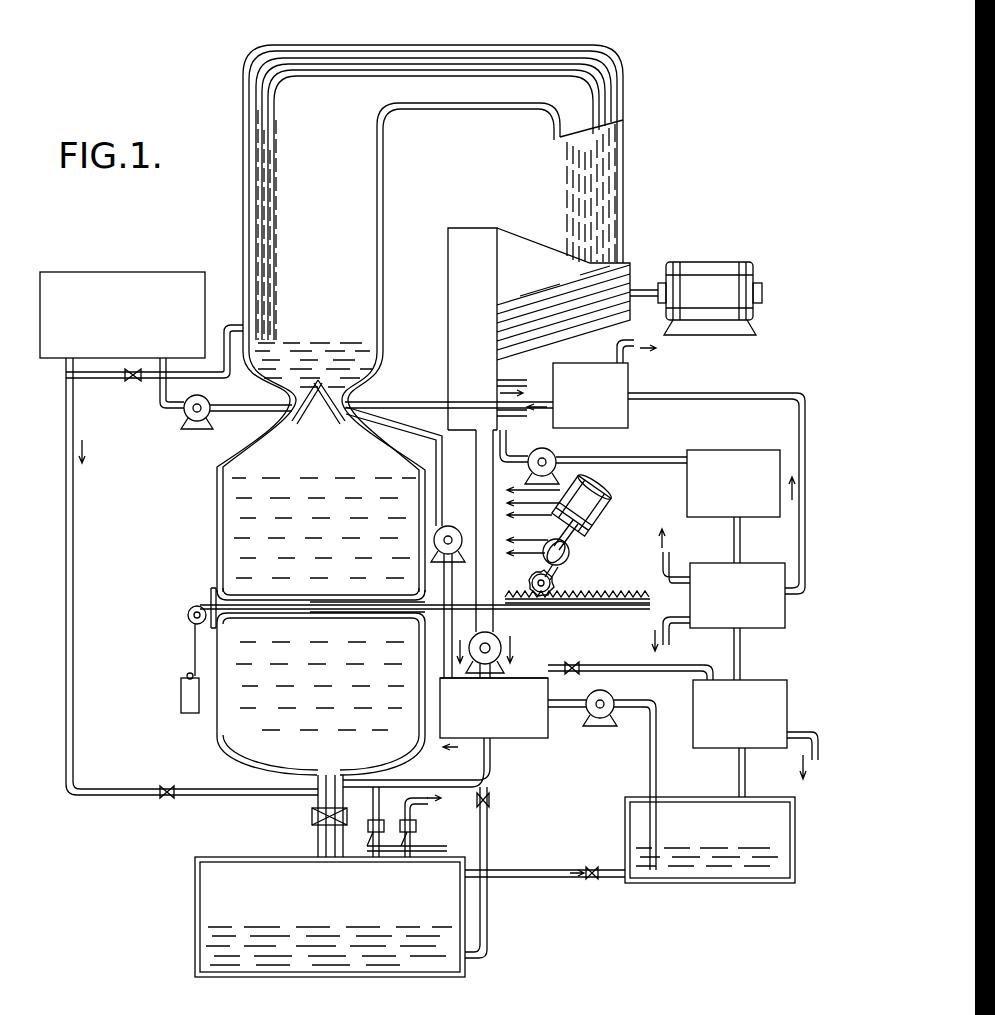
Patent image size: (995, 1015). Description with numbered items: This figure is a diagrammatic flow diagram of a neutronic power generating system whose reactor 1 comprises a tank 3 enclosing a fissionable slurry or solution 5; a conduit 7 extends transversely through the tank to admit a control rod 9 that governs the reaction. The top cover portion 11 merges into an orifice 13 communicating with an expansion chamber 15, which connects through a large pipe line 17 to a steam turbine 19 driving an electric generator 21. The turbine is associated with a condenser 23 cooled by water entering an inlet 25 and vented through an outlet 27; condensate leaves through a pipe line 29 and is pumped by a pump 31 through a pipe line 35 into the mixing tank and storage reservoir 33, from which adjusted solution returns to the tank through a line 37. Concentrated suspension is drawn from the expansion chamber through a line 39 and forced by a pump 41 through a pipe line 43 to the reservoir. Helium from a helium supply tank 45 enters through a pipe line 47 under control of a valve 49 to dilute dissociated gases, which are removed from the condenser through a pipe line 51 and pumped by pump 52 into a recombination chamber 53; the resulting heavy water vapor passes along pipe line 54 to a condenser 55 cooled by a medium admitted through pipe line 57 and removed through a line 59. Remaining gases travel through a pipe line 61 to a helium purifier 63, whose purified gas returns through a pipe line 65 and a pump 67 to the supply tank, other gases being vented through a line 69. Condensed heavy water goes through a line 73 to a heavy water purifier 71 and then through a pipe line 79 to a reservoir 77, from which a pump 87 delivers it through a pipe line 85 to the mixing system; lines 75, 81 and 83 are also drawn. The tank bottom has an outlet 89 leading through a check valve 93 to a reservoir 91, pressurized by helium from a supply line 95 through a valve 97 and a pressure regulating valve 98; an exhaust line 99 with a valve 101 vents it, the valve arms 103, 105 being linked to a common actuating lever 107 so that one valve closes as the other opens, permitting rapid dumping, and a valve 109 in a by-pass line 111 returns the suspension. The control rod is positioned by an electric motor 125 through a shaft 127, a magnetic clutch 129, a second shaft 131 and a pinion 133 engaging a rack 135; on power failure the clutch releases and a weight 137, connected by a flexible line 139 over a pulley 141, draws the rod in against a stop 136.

The reactor 1 is at (203, 502).
The tank 3 is at (218, 525).
The slurry or solution 5 is at (240, 546).
The conduit 7 is at (278, 618).
The control rod 9 is at (412, 611).
The top cover portion 11 is at (232, 452).
The orifice 13 is at (319, 379).
The expansion chamber 15 is at (378, 215).
The pipe line 17 is at (500, 65).
The steam turbine 19 is at (507, 240).
The electric generator 21 is at (710, 266).
The condenser 23 is at (448, 268).
The inlet 25 is at (510, 418).
The outlet 27 is at (528, 380).
The pipe line 29 is at (476, 490).
The pump 31 is at (498, 648).
The mixing tank and storage reservoir 33 is at (548, 734).
The pipe line 35 is at (480, 672).
The line 37 is at (488, 762).
The line 39 is at (404, 430).
The pump 41 is at (456, 531).
The pipe line 43 is at (460, 616).
The helium supply tank 45 is at (172, 275).
The pipe line 47 is at (110, 378).
The valve 49 is at (133, 382).
The pipe line 51 is at (505, 446).
The pump 52 is at (553, 455).
The recombination chamber 53 is at (730, 450).
The pipe line 54 is at (741, 535).
The condenser 55 is at (770, 625).
The pipe line 57 is at (668, 617).
The line 59 is at (676, 562).
The pipe line 61 is at (762, 386).
The helium purifier 63 is at (628, 380).
The pipe line 65 is at (392, 401).
The pump 67 is at (207, 404).
The line 69 is at (616, 350).
The heavy water purifier 71 is at (787, 695).
The line 73 is at (742, 659).
The outlet 75 is at (802, 732).
The reservoir 77 is at (782, 811).
The pipe line 79 is at (746, 770).
The valve 81 is at (565, 666).
The conduit 83 is at (580, 666).
The pipe line 85 is at (652, 765).
The pump 87 is at (603, 720).
The outlet 89 is at (316, 780).
The reservoir 91 is at (210, 905).
The check valve 93 is at (311, 816).
The supply line 95 is at (74, 580).
The valve 97 is at (383, 820).
The pressure regulating valve 98 is at (166, 800).
The exhaust line 99 is at (420, 814).
The valve 101 is at (416, 828).
The valve arm 103 is at (370, 836).
The valve arm 105 is at (418, 848).
The actuating lever 107 is at (418, 862).
The valve 109 is at (495, 800).
The by-pass line 111 is at (489, 912).
The electric motor 125 is at (602, 506).
The shaft 127 is at (576, 530).
The magnetic clutch 129 is at (570, 551).
The second shaft 131 is at (560, 567).
The pinion 133 is at (530, 584).
The rack 135 is at (600, 592).
The stop 136 is at (210, 590).
The weight 137 is at (181, 690).
The flexible line 139 is at (194, 648).
The pulley 141 is at (188, 616).